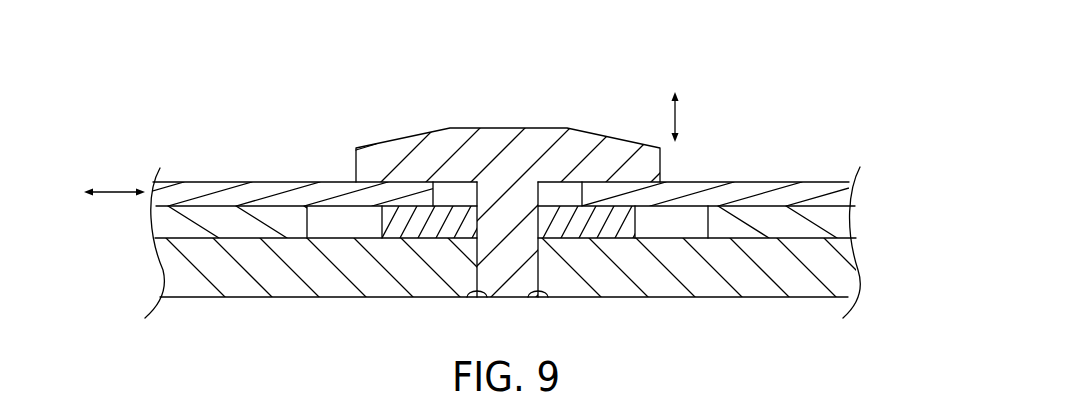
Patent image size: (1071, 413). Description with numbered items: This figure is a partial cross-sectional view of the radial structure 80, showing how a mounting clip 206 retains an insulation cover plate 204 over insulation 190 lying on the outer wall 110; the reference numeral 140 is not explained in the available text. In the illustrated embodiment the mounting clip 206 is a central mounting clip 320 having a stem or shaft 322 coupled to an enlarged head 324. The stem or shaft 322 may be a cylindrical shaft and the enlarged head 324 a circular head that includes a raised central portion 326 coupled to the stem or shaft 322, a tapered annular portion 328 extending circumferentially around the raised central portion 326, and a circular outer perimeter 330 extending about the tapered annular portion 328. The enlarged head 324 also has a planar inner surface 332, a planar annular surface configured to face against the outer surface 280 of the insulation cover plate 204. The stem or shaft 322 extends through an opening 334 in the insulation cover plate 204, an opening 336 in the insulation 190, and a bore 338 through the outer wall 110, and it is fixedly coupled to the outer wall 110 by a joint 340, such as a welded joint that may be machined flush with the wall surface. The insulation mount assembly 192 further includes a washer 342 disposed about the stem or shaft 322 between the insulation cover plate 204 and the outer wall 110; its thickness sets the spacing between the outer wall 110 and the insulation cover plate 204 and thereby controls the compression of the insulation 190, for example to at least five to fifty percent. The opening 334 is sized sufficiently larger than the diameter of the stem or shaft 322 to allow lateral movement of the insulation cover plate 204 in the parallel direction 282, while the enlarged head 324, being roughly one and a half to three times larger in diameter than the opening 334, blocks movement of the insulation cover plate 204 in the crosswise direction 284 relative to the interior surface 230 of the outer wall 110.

The radial structure 80 is at (831, 112).
The outer wall 110 is at (857, 290).
The interconnect structure 140 is at (758, 63).
The insulation 190 is at (847, 212).
The insulation mount assembly 192 is at (338, 107).
The insulation cover plate 204 is at (848, 190).
The mounting clip 206 is at (610, 63).
The interior surface 230 is at (832, 238).
The outer surface 280 is at (762, 182).
The parallel direction 282 is at (110, 192).
The crosswise direction 284 is at (678, 114).
The central mounting clip 320 is at (482, 90).
The stem or shaft 322 is at (540, 262).
The enlarged head 324 is at (583, 112).
The raised central portion 326 is at (540, 127).
The tapered annular portion 328 is at (398, 138).
The circular outer perimeter 330 is at (356, 150).
The planar inner surface 332 is at (397, 183).
The opening 334 is at (538, 198).
The opening 336 is at (708, 225).
The bore 338 is at (478, 253).
The joint 340 is at (475, 297).
The washer 342 is at (410, 227).